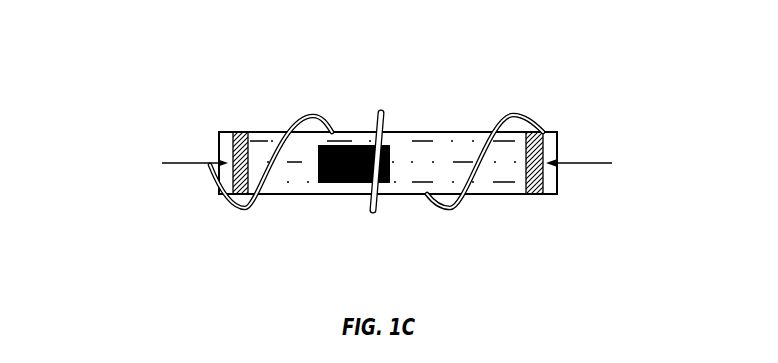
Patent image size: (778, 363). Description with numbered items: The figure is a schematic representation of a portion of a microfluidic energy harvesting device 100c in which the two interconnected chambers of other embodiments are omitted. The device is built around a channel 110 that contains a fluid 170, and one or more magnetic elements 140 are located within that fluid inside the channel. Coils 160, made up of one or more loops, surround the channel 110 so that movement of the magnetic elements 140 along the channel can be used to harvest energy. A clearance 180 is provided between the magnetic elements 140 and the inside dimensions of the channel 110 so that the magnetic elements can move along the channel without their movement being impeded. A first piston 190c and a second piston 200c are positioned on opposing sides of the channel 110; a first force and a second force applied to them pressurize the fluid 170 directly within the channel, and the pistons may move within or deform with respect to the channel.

The energy harvesting device 100c is at (131, 48).
The channel 110 is at (500, 195).
The magnetic element 140 is at (338, 184).
The coil 160 is at (385, 112).
The fluid 170 is at (447, 150).
The clearance 180 is at (312, 136).
The first piston 190c is at (231, 140).
The second piston 200c is at (545, 183).